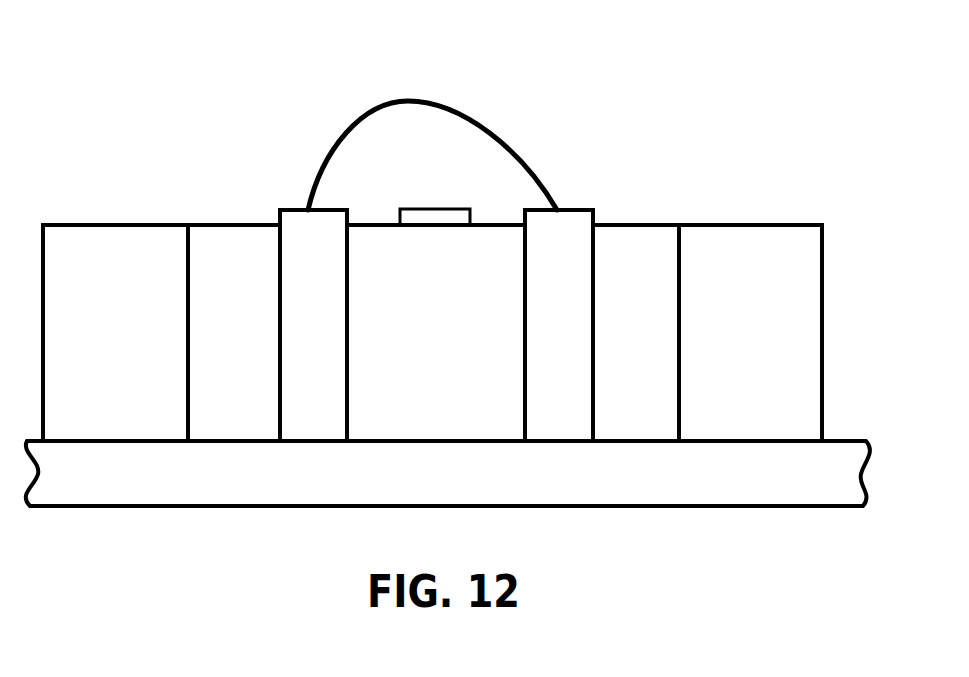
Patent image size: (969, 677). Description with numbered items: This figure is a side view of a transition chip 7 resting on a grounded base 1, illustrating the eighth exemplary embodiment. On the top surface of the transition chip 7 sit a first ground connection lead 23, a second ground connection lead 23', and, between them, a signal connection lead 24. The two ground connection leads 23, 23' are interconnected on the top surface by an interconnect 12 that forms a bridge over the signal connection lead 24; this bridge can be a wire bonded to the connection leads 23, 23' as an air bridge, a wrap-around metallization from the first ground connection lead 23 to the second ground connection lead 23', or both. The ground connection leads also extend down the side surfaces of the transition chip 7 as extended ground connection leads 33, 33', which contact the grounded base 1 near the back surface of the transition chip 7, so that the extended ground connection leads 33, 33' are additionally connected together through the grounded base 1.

The grounded base 1 is at (830, 453).
The transition chip 7 is at (748, 262).
The interconnect 12 is at (428, 103).
The first ground connection lead 23 is at (588, 298).
The second ground connection lead 23' is at (273, 298).
The signal connection lead 24 is at (415, 208).
The extended ground connection lead 33 is at (630, 333).
The extended ground connection lead 33' is at (239, 333).